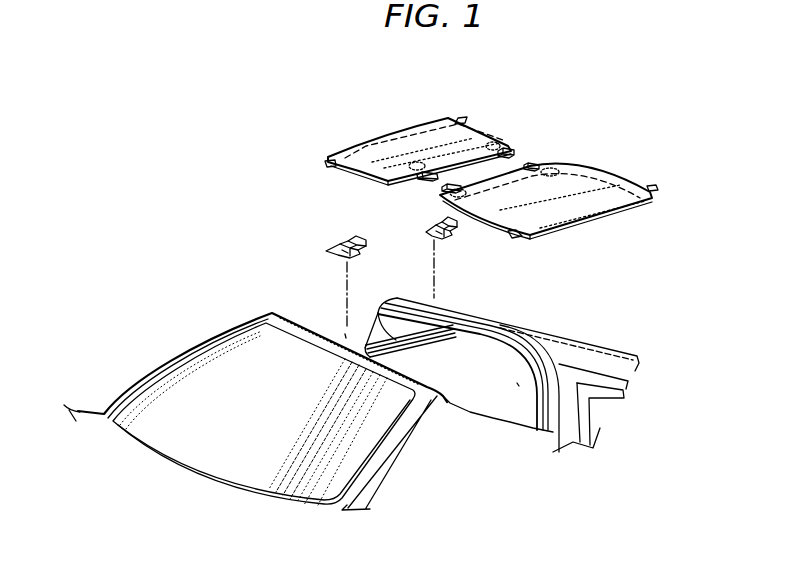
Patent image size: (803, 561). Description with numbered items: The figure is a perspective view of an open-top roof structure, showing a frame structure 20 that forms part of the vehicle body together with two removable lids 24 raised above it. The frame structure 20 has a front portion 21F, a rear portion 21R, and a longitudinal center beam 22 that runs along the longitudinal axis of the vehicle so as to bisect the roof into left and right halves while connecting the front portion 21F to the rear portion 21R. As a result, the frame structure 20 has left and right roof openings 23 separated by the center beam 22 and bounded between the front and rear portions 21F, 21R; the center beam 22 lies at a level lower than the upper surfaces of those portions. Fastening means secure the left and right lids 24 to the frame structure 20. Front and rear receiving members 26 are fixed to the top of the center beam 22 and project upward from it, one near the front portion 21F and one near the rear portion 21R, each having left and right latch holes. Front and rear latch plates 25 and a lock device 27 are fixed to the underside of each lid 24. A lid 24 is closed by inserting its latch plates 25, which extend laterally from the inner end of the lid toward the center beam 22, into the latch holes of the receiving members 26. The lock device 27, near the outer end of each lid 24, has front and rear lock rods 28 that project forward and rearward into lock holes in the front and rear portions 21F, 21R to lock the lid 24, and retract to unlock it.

The frame structure 20 is at (351, 375).
The front portion 21F is at (287, 322).
The rear portion 21R is at (483, 327).
The longitudinal center beam 22 is at (376, 305).
The roof openings 23 is at (345, 333).
The lids 24 is at (495, 132).
The latch plates 25 is at (417, 178).
The receiving members 26 is at (329, 242).
The lock device 27 is at (370, 148).
The lock rods 28 is at (463, 118).